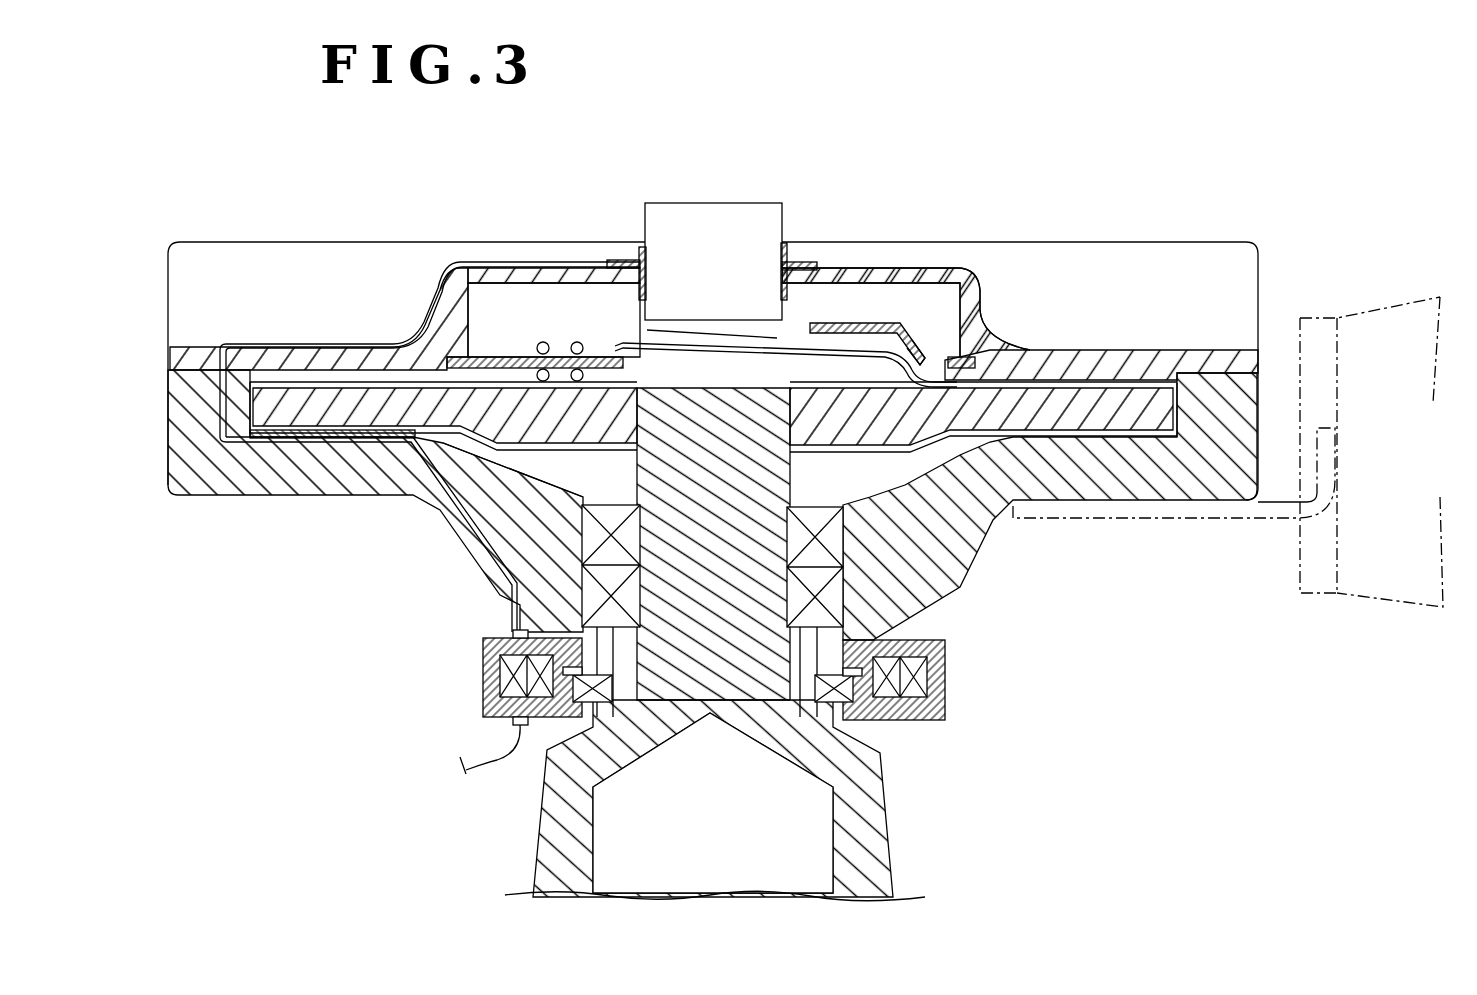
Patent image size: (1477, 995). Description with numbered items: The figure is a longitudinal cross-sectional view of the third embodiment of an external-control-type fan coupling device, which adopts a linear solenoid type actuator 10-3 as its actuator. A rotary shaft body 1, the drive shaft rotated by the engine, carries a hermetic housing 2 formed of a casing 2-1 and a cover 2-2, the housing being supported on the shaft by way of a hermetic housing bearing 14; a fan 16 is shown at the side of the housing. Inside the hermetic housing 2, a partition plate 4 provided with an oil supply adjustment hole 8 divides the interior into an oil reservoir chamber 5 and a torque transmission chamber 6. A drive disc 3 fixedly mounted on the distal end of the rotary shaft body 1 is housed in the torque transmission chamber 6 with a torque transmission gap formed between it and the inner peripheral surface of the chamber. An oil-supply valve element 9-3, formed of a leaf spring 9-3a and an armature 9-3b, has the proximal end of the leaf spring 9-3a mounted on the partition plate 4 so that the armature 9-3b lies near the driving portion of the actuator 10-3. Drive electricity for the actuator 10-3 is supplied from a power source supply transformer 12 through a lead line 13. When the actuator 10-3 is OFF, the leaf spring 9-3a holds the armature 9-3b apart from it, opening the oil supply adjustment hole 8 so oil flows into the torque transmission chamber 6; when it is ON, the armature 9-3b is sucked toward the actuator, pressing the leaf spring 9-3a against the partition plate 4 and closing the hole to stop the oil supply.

The rotary shaft body 1 is at (877, 816).
The hermetic housing 2 is at (1172, 213).
The casing 2-1 is at (247, 490).
The cover 2-2 is at (172, 360).
The drive disc 3 is at (1099, 400).
The partition plate 4 is at (915, 340).
The oil reservoir chamber 5 is at (495, 315).
The torque transmission chamber 6 is at (537, 472).
The oil supply adjustment hole 8 is at (961, 355).
The oil-supply valve element 9-3 is at (599, 330).
The leaf spring 9-3a is at (864, 350).
The armature 9-3b is at (787, 335).
The linear solenoid type actuator 10-3 is at (698, 213).
The power source supply transformer 12 is at (466, 681).
The lead line 13 is at (417, 320).
The hermetic housing bearing 14 is at (833, 597).
The fan 16 is at (1380, 577).